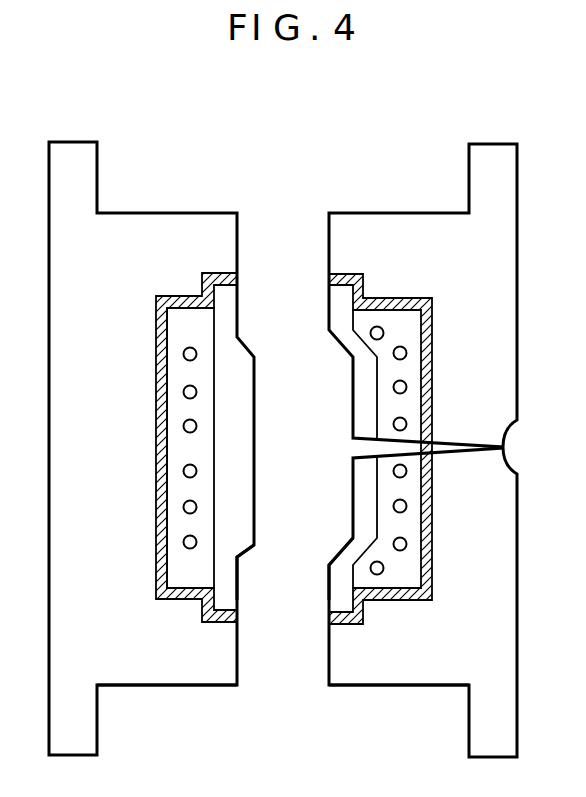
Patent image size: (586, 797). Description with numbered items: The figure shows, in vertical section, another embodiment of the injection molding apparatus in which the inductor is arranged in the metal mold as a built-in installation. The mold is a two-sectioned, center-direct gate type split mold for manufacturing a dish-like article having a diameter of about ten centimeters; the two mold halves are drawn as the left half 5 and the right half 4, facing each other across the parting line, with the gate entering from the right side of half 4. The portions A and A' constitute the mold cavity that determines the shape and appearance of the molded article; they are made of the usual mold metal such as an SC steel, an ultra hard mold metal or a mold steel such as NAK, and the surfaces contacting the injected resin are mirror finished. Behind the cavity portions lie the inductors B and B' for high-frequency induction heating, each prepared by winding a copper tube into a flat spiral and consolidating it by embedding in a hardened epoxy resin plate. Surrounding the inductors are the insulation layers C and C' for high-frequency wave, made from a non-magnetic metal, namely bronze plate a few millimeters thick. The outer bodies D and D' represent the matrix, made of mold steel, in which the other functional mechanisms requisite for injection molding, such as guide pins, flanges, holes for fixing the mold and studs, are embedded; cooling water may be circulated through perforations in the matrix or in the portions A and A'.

The first mold member 4 is at (440, 255).
The second mold member 5 is at (145, 255).
The mold cavity portion A is at (329, 569).
The mold cavity portion A' is at (250, 572).
The inductor B is at (354, 449).
The inductor B' is at (216, 448).
The insulation layer C is at (380, 454).
The insulation layer C' is at (196, 454).
The matrix D is at (399, 679).
The matrix D' is at (167, 683).